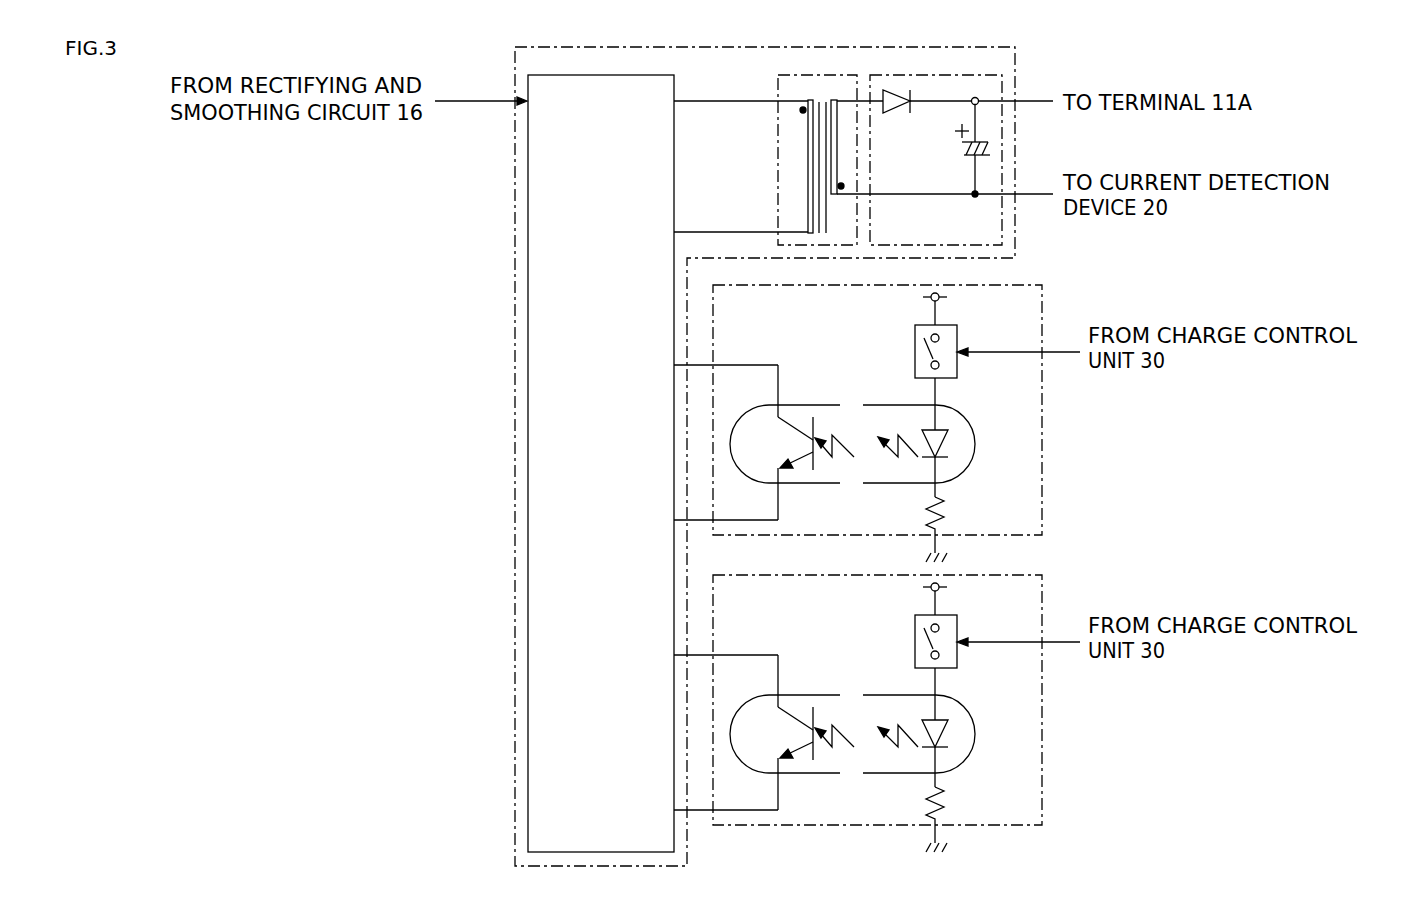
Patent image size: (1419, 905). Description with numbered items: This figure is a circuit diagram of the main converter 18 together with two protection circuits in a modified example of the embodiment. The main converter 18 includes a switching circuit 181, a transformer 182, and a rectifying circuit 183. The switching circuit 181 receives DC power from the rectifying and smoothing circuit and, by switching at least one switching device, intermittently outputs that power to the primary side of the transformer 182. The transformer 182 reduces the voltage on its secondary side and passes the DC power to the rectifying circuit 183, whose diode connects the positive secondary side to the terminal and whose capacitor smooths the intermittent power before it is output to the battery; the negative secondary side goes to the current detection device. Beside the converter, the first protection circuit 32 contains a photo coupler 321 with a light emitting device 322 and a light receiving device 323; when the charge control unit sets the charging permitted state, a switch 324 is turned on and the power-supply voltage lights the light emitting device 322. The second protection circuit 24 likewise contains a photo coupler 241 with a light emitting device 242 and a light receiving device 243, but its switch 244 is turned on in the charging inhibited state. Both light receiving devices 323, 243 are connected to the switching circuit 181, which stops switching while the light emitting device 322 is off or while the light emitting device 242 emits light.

The main converter 18 is at (515, 82).
The switching circuit 181 is at (633, 76).
The transformer 182 is at (778, 84).
The rectifying circuit 183 is at (1005, 82).
The first protection circuit 32 is at (1043, 413).
The photo coupler 321 is at (878, 405).
The light emitting device 322 is at (958, 418).
The light receiving device 323 is at (797, 406).
The switch 324 is at (957, 341).
The second protection circuit 24 is at (1043, 703).
The photo coupler 241 is at (878, 695).
The light emitting device 242 is at (958, 708).
The light receiving device 243 is at (797, 696).
The switch 244 is at (957, 631).